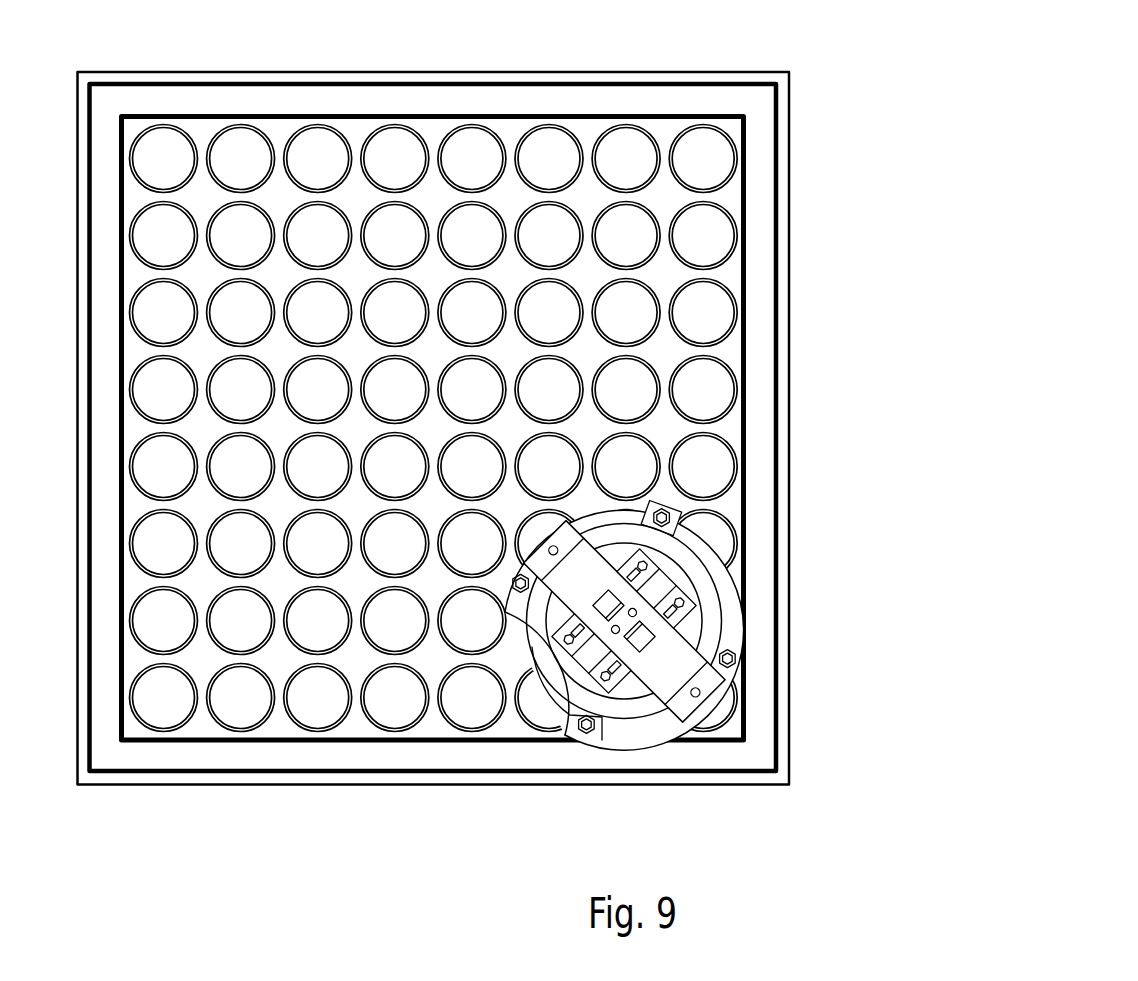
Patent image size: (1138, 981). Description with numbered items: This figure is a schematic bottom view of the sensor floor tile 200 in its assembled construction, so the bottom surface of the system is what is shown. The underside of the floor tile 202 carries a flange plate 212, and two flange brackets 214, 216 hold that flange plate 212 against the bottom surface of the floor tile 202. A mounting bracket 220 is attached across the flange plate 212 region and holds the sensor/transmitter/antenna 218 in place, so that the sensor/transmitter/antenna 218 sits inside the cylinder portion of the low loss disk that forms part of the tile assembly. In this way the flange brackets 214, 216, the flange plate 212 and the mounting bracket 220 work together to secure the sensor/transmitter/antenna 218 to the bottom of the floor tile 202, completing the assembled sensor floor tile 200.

The sensor floor tile 200 is at (861, 72).
The floor tile 202 is at (791, 182).
The flange plate 212 is at (756, 578).
The flange bracket 214 is at (763, 608).
The flange bracket 216 is at (557, 718).
The sensor/transmitter/antenna 218 is at (841, 621).
The mounting bracket 220 is at (785, 622).